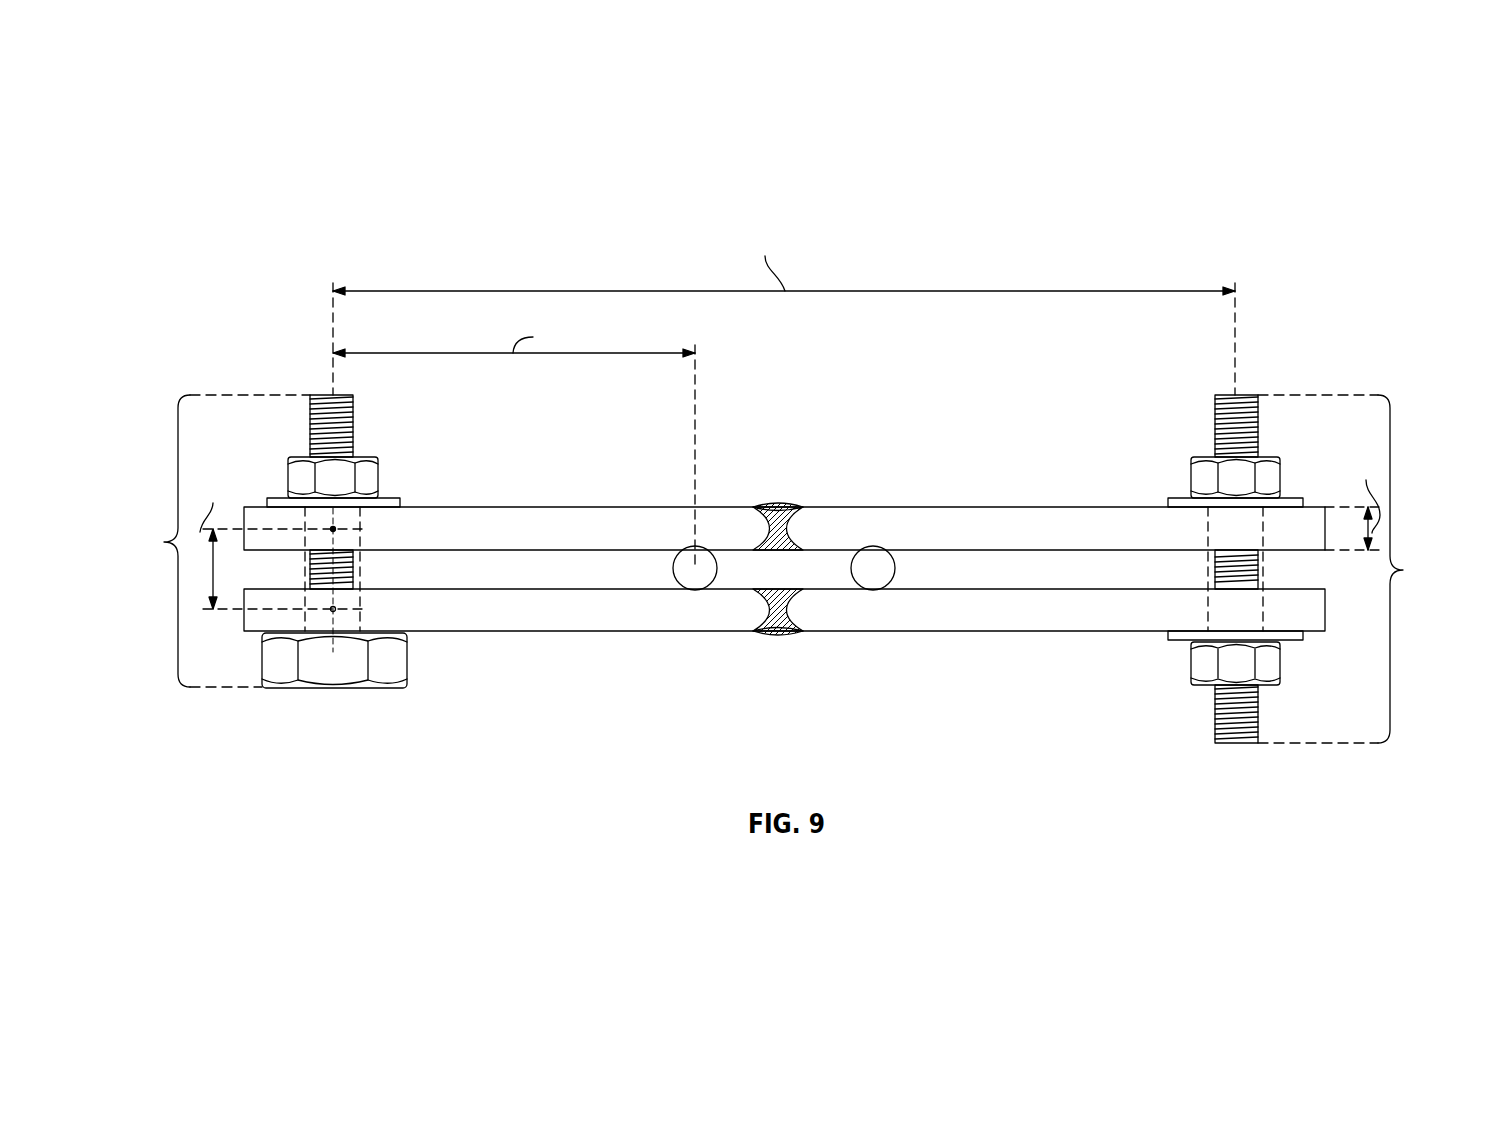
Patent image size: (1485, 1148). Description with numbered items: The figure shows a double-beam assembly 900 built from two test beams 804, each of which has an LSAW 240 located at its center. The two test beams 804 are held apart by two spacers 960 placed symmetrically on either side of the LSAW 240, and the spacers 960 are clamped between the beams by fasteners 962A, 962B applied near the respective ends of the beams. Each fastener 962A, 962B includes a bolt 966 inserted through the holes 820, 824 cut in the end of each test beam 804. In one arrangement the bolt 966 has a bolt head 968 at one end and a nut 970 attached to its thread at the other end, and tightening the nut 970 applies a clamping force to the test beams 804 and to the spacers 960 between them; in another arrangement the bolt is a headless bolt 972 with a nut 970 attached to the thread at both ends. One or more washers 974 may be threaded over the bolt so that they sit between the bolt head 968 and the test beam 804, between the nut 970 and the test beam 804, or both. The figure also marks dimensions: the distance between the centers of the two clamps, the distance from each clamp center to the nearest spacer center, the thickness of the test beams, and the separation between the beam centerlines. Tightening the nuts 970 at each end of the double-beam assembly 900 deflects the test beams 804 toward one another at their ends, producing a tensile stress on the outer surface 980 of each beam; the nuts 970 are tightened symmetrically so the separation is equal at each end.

The double-beam assembly 900 is at (1070, 197).
The fastener 962A is at (252, 561).
The fastener 962B is at (1301, 574).
The bolt 966 is at (308, 400).
The nut 970 is at (296, 462).
The washer 974 is at (283, 500).
The bolt head 968 is at (327, 688).
The headless bolt 972 is at (1213, 715).
The test beam 804 is at (1044, 578).
The hole 820 is at (353, 600).
The hole 824 is at (1228, 620).
The outer surface 980 is at (637, 507).
The spacer 960 is at (866, 556).
The LSAW 240 is at (805, 516).